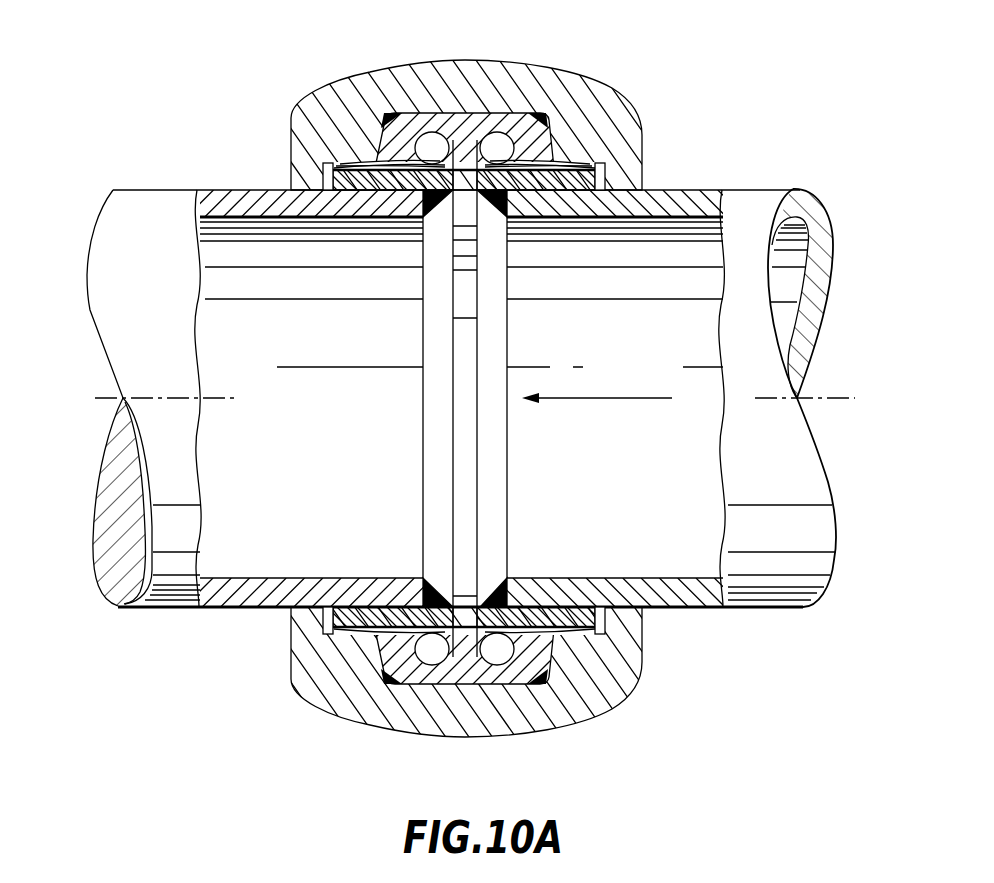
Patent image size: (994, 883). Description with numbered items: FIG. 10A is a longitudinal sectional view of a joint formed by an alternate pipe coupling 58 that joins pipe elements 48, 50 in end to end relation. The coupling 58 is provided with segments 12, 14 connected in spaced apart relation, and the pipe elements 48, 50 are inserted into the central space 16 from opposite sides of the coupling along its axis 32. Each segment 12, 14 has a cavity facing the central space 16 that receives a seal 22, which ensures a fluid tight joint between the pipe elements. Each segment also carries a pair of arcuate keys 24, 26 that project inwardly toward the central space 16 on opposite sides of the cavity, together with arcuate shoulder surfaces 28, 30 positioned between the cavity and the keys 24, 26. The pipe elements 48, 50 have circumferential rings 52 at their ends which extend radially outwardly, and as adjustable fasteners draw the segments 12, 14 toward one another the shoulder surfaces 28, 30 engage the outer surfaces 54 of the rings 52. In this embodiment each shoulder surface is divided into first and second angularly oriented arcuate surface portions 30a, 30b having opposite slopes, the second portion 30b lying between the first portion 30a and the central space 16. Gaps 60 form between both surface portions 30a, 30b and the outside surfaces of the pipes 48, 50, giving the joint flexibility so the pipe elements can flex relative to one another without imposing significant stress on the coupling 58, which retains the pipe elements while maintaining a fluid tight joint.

The segment 12 is at (493, 67).
The segment 14 is at (370, 707).
The central space 16 is at (458, 521).
The seal 22 is at (543, 681).
The arcuate key 24 is at (322, 167).
The arcuate key 26 is at (610, 182).
The arcuate shoulder surface 28 is at (333, 165).
The arcuate shoulder surface 30 is at (602, 165).
The first arcuate surface portion 30a is at (642, 150).
The second arcuate surface portion 30b is at (580, 163).
The axis 32 is at (812, 398).
The pipe element 48 is at (256, 600).
The pipe element 50 is at (698, 600).
The circumferential ring 52 is at (558, 677).
The outer surface 54 is at (598, 219).
The coupling 58 is at (745, 151).
The gap 60 is at (557, 162).